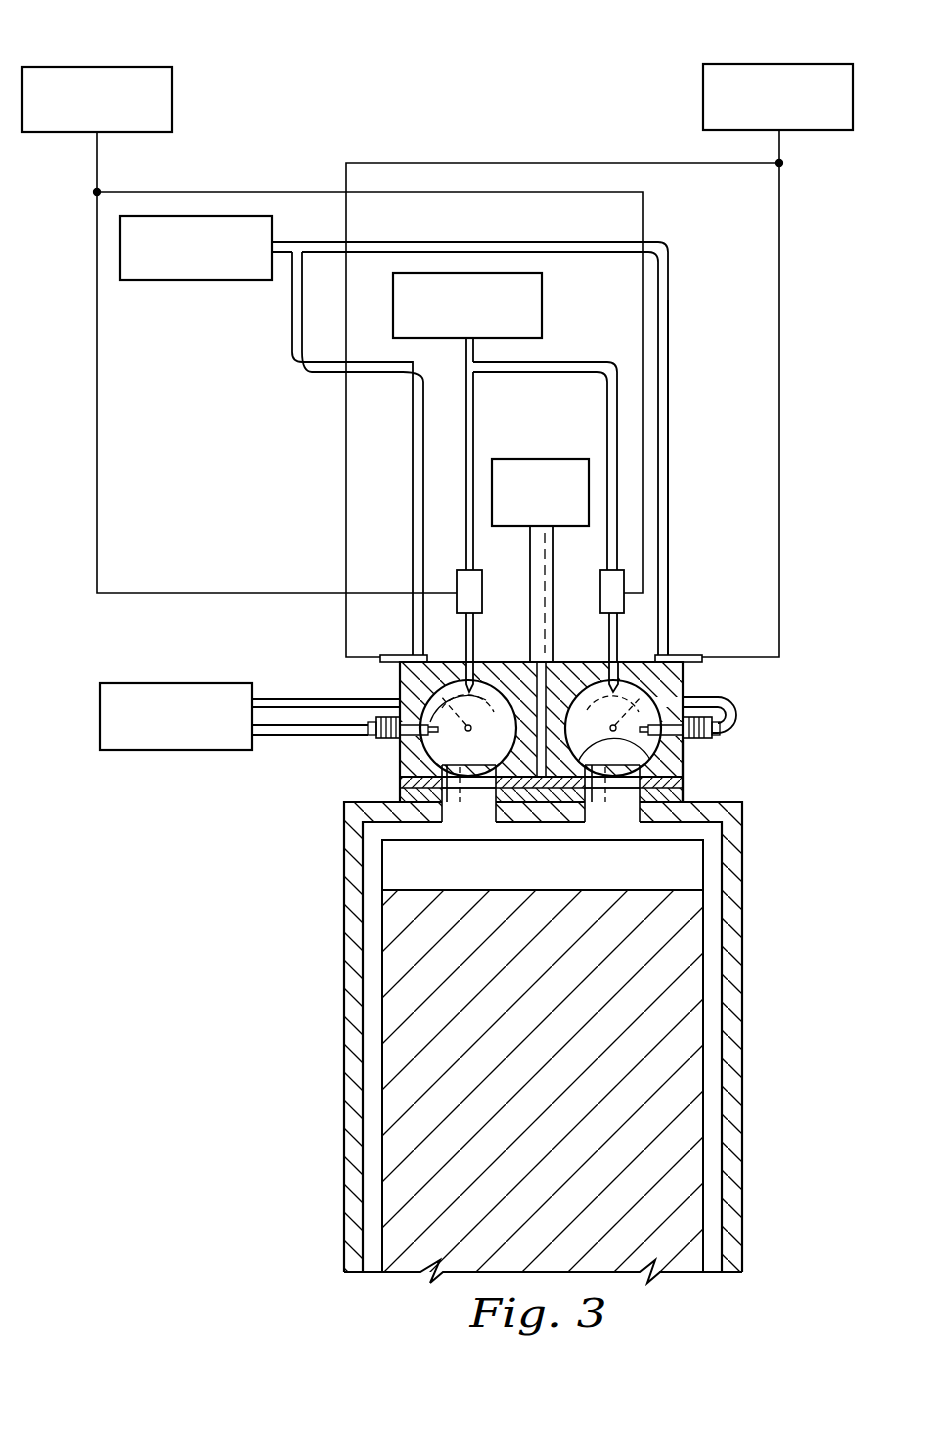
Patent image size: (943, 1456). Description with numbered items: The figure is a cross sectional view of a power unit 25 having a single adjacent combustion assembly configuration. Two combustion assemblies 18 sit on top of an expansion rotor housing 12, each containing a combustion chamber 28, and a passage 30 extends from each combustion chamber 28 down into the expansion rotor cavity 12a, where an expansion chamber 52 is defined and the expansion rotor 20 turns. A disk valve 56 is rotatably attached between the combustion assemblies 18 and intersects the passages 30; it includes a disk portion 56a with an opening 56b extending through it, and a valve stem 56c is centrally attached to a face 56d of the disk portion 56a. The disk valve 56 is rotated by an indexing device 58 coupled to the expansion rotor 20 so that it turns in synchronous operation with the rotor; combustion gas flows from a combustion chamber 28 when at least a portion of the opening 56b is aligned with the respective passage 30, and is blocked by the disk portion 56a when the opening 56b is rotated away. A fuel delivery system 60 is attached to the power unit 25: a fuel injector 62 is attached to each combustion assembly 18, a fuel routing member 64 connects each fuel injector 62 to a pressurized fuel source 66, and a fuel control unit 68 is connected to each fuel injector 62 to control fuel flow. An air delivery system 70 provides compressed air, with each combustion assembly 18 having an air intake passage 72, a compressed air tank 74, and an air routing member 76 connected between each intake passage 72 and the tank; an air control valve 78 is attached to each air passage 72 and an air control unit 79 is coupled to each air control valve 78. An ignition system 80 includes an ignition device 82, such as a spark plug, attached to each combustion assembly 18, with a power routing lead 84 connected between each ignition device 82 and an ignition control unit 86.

The fuel control unit 68 is at (97, 66).
The air control unit 79 is at (780, 63).
The compressed air tank 74 is at (195, 281).
The air delivery system 70 is at (672, 300).
The air routing member 76 is at (669, 365).
The pressurized fuel source 66 is at (542, 302).
The fuel routing member 64 is at (603, 362).
The fuel delivery system 60 is at (480, 430).
The fuel injector 62 is at (457, 580).
The indexing device 58 is at (560, 459).
The valve stem 56c is at (556, 660).
The air control valve 78 is at (393, 655).
The combustion assembly 18 is at (400, 686).
The combustion chamber 28 is at (452, 672).
The air intake passage 72 is at (484, 672).
The ignition control unit 86 is at (100, 720).
The power routing lead 84 is at (290, 697).
The ignition device 82 is at (370, 738).
The ignition system 80 is at (737, 712).
The disk portion 56a is at (400, 792).
The disk valve 56 is at (630, 805).
The face 56d is at (683, 762).
The opening 56b is at (468, 805).
The passage 30 is at (485, 822).
The expansion rotor housing 12 is at (742, 1178).
The expansion rotor cavity 12a is at (722, 995).
The expansion chamber 52 is at (742, 856).
The expansion rotor 20 is at (695, 1115).
The power unit 25 is at (784, 805).